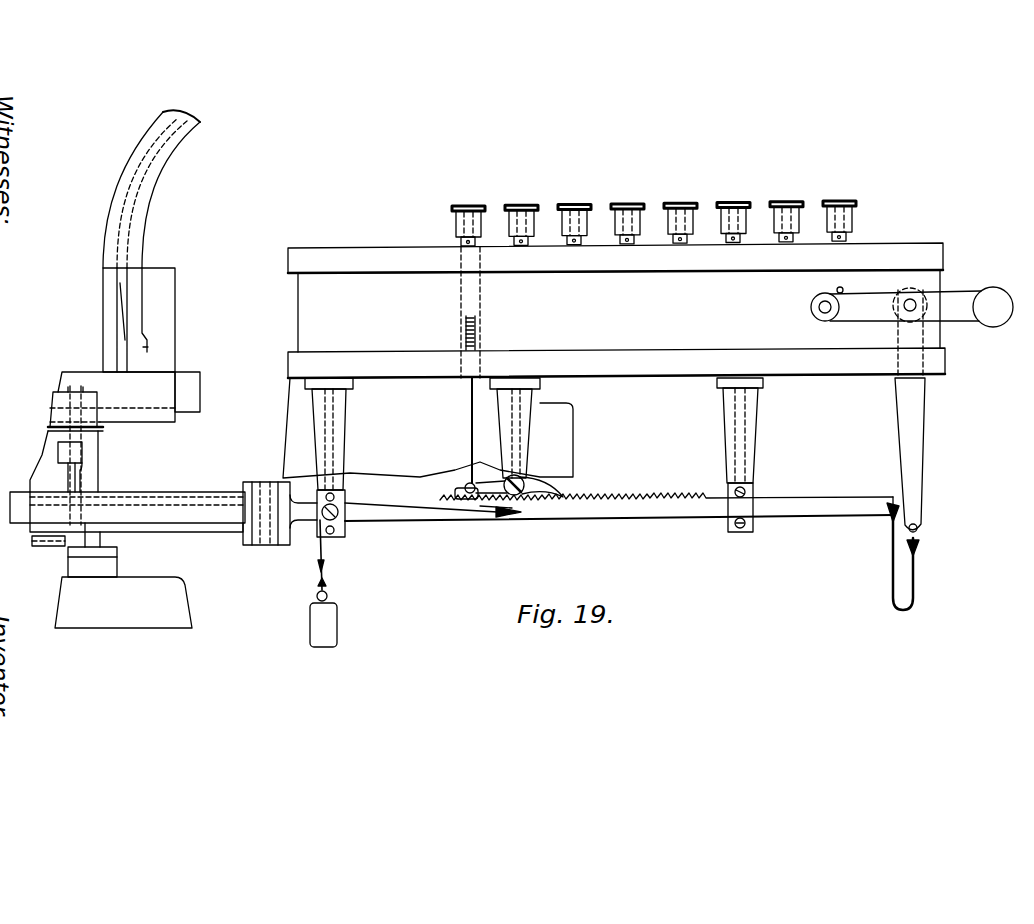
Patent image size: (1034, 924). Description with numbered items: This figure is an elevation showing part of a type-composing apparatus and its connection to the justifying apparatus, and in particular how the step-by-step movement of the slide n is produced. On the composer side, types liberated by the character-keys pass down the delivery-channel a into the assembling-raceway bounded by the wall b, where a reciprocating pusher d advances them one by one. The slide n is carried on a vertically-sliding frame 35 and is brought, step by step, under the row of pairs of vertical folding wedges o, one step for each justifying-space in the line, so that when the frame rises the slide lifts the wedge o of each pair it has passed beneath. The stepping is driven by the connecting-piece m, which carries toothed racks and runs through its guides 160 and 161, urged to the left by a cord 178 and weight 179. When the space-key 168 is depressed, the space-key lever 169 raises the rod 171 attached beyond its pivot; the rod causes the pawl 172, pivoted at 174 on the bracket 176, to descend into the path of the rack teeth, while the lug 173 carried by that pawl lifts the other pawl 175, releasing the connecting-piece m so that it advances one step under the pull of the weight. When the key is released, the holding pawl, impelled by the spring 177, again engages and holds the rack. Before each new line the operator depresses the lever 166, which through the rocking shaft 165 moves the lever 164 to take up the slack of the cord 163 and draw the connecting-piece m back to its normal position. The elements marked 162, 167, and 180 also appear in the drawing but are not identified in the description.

The table 162 is at (616, 310).
The space-key 168 is at (465, 207).
The space-key lever 169 is at (478, 320).
The lever 166 is at (836, 307).
The rocking shaft 165 is at (918, 302).
The pin 167 is at (843, 289).
The guide 160 is at (330, 540).
The weight 179 is at (344, 619).
The bracket 176 is at (515, 428).
The rod 171 is at (470, 430).
The pawl 172 is at (528, 480).
The spring 177 is at (502, 478).
The pawl 175 is at (456, 496).
The cord 178 is at (398, 510).
The pivot 174 is at (523, 514).
The lug 173 is at (478, 512).
The ratchet bar 180 is at (670, 498).
The connecting-piece m is at (603, 516).
The guide 161 is at (728, 528).
The lever 164 is at (933, 411).
The cord 163 is at (893, 602).
The delivery-channel a is at (120, 283).
The wall b is at (112, 397).
The reciprocating pusher d is at (188, 376).
The folding wedge o is at (70, 490).
The slide n is at (213, 527).
The vertically-sliding frame 35 is at (48, 540).